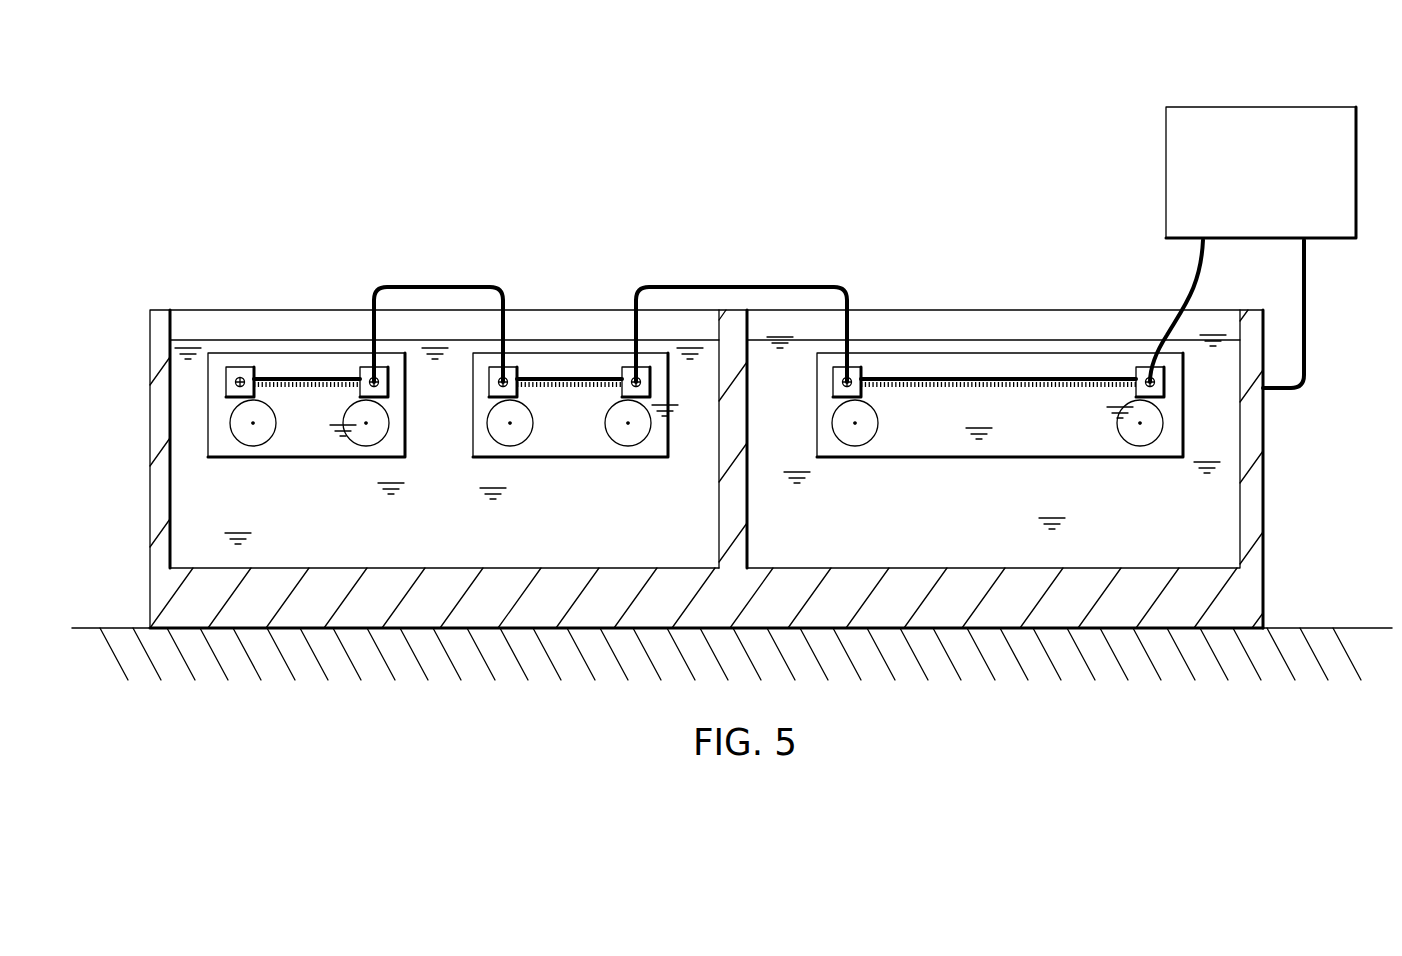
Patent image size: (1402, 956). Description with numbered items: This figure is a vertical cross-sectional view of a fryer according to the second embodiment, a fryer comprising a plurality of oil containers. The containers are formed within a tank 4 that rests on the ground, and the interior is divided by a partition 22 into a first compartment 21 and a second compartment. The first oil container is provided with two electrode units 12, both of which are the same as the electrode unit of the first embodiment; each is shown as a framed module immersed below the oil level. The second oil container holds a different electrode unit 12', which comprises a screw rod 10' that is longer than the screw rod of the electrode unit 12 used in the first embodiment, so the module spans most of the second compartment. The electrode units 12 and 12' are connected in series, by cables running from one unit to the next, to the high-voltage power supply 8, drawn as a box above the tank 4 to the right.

The tank 4 is at (184, 502).
The high-voltage power supply 8 is at (1275, 106).
The screw rod 10' is at (998, 321).
The electrode unit 12 is at (527, 347).
The electrode unit 12' is at (1000, 347).
The first compartment 21 is at (171, 330).
The partition wall 22 is at (749, 318).